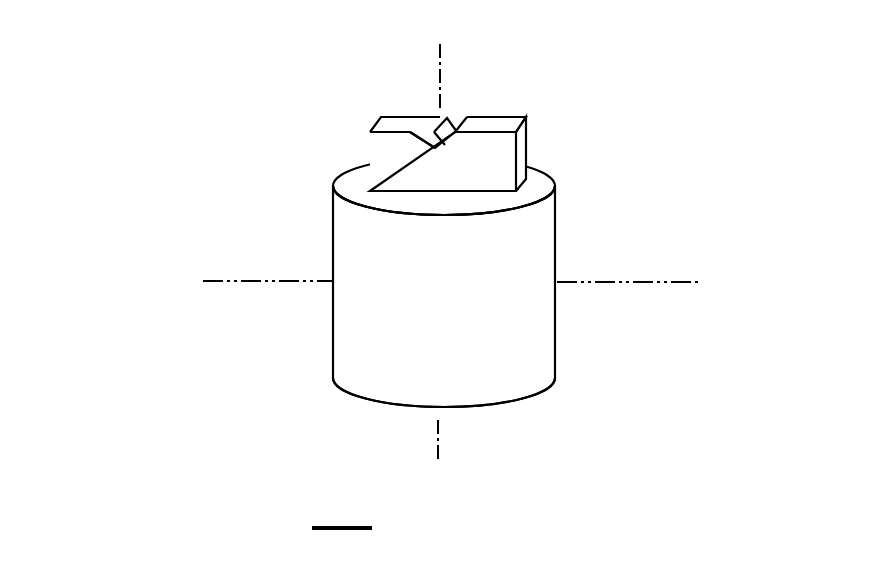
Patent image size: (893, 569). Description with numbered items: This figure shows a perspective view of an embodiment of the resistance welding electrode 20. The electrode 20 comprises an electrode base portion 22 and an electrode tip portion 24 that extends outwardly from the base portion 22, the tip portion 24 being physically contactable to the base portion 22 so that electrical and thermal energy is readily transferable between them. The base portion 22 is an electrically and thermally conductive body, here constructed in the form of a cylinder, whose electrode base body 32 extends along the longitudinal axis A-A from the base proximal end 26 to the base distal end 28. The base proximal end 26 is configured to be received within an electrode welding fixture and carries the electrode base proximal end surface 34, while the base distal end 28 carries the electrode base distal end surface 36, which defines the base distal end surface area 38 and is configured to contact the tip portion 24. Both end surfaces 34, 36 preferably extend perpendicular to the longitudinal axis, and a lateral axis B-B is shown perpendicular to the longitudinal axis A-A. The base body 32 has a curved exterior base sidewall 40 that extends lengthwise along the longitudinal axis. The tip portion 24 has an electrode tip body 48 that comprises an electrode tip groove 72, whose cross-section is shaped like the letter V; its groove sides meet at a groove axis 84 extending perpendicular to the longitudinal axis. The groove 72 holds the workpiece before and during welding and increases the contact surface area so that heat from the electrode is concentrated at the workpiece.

The resistance welding electrode 20 is at (641, 149).
The electrode base portion 22 is at (527, 333).
The electrode tip portion 24 is at (377, 148).
The base proximal end 26 is at (363, 397).
The base distal end 28 is at (547, 175).
The electrode base body 32 is at (538, 245).
The electrode base proximal end surface 34 is at (490, 408).
The electrode base distal end surface 36 is at (357, 184).
The base distal end surface area 38 is at (516, 197).
The curved exterior base sidewall 40 is at (353, 325).
The electrode tip body 48 is at (493, 157).
The electrode tip groove 72 is at (450, 122).
The groove axis 84 is at (435, 147).